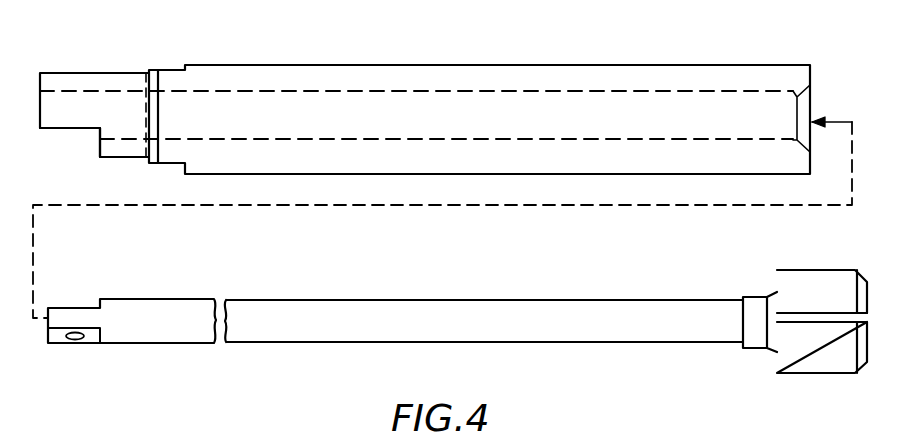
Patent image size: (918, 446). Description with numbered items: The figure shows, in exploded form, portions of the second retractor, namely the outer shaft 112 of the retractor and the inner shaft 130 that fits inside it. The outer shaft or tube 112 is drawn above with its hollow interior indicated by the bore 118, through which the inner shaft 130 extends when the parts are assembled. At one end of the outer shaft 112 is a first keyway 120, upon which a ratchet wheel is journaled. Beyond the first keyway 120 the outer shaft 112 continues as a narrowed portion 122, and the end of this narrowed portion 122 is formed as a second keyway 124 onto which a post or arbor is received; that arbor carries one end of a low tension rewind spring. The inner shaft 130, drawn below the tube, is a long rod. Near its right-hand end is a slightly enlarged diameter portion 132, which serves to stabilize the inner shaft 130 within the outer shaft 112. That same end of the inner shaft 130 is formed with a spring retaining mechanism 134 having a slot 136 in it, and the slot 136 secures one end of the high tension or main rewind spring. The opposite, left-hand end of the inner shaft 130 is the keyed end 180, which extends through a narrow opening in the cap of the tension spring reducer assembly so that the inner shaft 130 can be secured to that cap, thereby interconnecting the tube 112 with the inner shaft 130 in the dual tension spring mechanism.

The outer shaft 112 is at (578, 20).
The bore 118 is at (340, 93).
The first keyway 120 is at (180, 69).
The narrowed portion 122 is at (108, 73).
The second keyway 124 is at (80, 129).
The inner shaft 130 is at (375, 300).
The enlarged diameter portion 132 is at (755, 297).
The spring retaining mechanism 134 is at (810, 287).
The slot 136 is at (812, 318).
The keyed end 180 is at (78, 308).